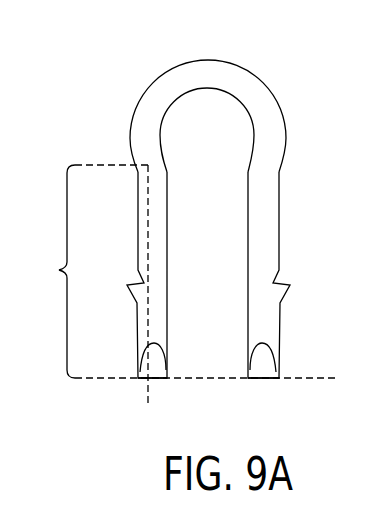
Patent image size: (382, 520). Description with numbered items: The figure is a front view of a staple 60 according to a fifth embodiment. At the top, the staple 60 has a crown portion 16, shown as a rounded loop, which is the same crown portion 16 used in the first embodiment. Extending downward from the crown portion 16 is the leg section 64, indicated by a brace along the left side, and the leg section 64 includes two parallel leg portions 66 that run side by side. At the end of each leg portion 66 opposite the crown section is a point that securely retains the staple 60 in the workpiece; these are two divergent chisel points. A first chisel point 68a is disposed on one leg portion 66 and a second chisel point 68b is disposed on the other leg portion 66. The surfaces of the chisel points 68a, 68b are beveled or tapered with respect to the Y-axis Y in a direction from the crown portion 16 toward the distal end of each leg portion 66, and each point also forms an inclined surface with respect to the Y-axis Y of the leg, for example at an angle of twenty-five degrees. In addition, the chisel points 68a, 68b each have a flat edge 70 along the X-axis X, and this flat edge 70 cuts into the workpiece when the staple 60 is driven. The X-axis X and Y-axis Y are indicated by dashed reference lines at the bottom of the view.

The staple 60 is at (252, 59).
The crown portion 16 is at (260, 98).
The leg portions 66 is at (142, 211).
The leg section 64 is at (182, 285).
The first chisel point 68a is at (267, 368).
The second chisel point 68b is at (140, 367).
The flat edge 70 is at (160, 383).
The X-axis X is at (313, 382).
The Y-axis Y is at (147, 404).